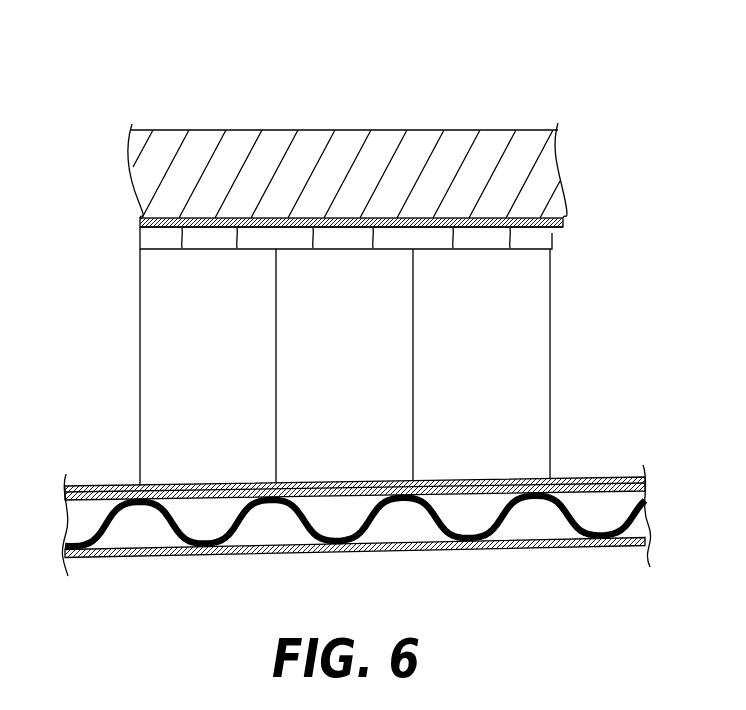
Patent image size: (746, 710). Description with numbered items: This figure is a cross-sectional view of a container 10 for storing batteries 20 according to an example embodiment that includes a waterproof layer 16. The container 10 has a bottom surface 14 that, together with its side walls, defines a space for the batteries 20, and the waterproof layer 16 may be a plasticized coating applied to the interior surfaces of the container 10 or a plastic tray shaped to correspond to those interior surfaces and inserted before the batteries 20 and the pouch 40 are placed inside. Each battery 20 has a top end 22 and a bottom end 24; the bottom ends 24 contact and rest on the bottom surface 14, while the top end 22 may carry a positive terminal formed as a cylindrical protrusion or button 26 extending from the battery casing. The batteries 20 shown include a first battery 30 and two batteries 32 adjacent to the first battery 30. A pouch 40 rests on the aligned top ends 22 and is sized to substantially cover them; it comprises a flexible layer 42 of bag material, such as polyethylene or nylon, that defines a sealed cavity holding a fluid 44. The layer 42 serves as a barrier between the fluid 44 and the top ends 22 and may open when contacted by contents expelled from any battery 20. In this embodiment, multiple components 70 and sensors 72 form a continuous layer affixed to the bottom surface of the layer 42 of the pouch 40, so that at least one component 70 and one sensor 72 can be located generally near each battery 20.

The container 10 is at (607, 146).
The bottom surface 14 is at (610, 546).
The waterproof layer 16 is at (600, 478).
The battery 20 is at (613, 281).
The top end 22 is at (138, 244).
The bottom end 24 is at (253, 483).
The cylindrical protrusion (button) 26 is at (204, 252).
The first battery 30 is at (385, 410).
The batteries adjacent to the first battery 32 is at (138, 355).
The pouch 40 is at (449, 91).
The layer 42 is at (178, 130).
The fluid 44 is at (310, 148).
The component 70 is at (140, 223).
The sensor 72 is at (262, 217).